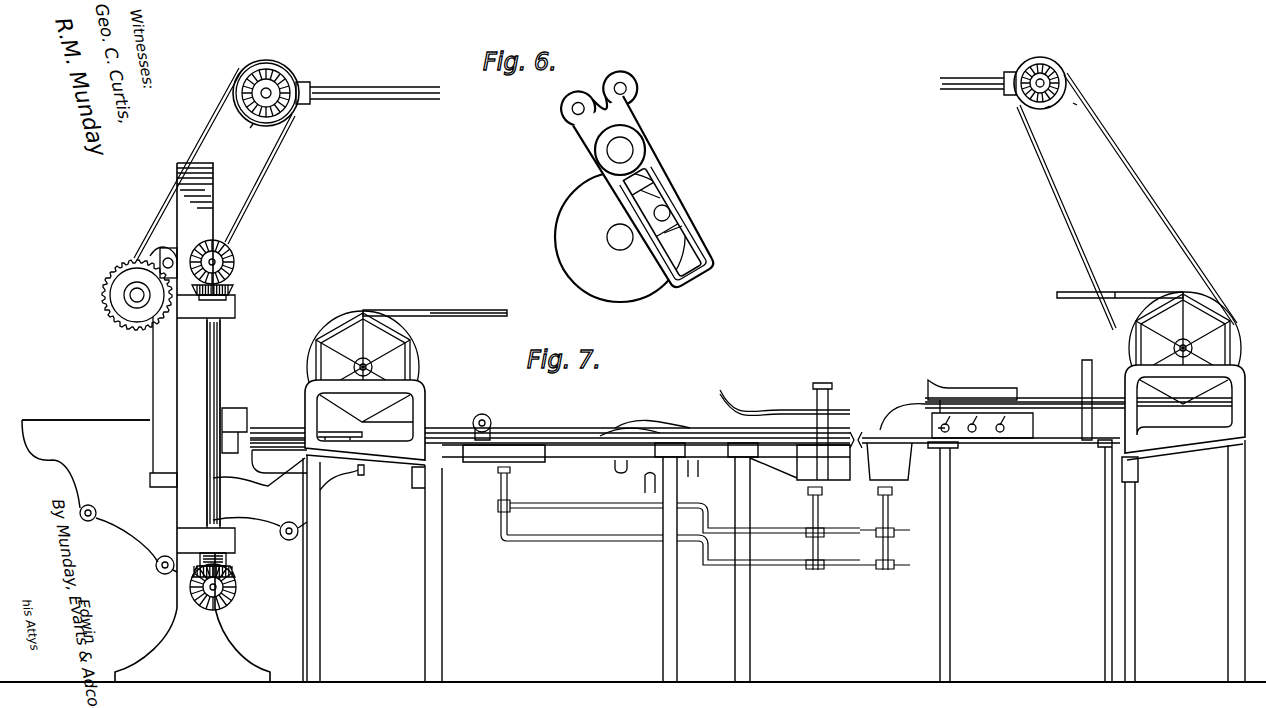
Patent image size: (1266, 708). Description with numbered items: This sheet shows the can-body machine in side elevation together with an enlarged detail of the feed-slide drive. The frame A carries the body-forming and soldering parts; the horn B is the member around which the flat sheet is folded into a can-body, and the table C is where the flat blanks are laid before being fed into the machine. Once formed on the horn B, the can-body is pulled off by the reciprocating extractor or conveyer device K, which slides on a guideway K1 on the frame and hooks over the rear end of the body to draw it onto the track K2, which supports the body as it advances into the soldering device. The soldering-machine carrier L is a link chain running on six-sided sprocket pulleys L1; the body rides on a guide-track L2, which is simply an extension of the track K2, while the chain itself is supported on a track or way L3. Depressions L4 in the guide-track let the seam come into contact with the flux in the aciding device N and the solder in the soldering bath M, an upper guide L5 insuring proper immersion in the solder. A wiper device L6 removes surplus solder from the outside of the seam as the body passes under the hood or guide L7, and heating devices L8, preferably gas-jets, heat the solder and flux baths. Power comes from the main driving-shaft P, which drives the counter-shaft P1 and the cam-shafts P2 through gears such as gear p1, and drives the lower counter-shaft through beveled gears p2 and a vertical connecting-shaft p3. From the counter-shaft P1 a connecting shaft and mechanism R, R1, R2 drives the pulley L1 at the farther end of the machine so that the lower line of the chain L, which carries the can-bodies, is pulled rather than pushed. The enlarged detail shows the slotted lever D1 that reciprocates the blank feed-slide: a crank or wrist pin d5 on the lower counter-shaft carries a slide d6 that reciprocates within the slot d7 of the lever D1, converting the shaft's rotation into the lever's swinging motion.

In FIG. 7, the frame A is at (164, 422).
In FIG. 7, the horn B is at (246, 416).
In FIG. 7, the table C is at (86, 436).
In FIG. 7, the can-body extractor or conveyer device K is at (360, 490).
In FIG. 7, the guideway K1 is at (279, 461).
In FIG. 7, the track or guide K2 is at (266, 440).
In FIG. 7, the carrier device L is at (430, 312).
In FIG. 7, the sprocket wheels or pulleys L1 is at (410, 350).
In FIG. 7, the guide-track L2 is at (452, 440).
In FIG. 7, the track or way L3 is at (520, 428).
In FIG. 7, the depressions L4 is at (690, 428).
In FIG. 7, the upper guide L5 is at (822, 429).
In FIG. 7, the wiper device L6 is at (975, 440).
In FIG. 7, the hood or guide L7 is at (968, 390).
In FIG. 7, the heating devices L8 is at (512, 485).
In FIG. 7, the soldering bath or device M is at (805, 462).
In FIG. 7, the aciding or fluxing device N is at (480, 460).
In FIG. 7, the main driving-shaft P is at (162, 262).
In FIG. 7, the counter-shaft P1 is at (232, 252).
In FIG. 7, the cam-shafts P2 is at (136, 292).
In FIG. 7, the gear p1 is at (118, 308).
In FIG. 7, the beveled gears p2 is at (250, 262).
In FIG. 7, the vertical connecting-shaft p3 is at (222, 366).
In FIG. 7, the connecting shaft and mechanism R is at (272, 86).
In FIG. 7, the connecting mechanism R1 is at (282, 148).
In FIG. 7, the connecting mechanism R2 is at (282, 124).
In FIG. 6, the slotted lever D1 is at (660, 157).
In FIG. 6, the crank or wrist pin d5 is at (673, 213).
In FIG. 6, the slide d6 is at (672, 222).
In FIG. 6, the slot d7 is at (703, 250).